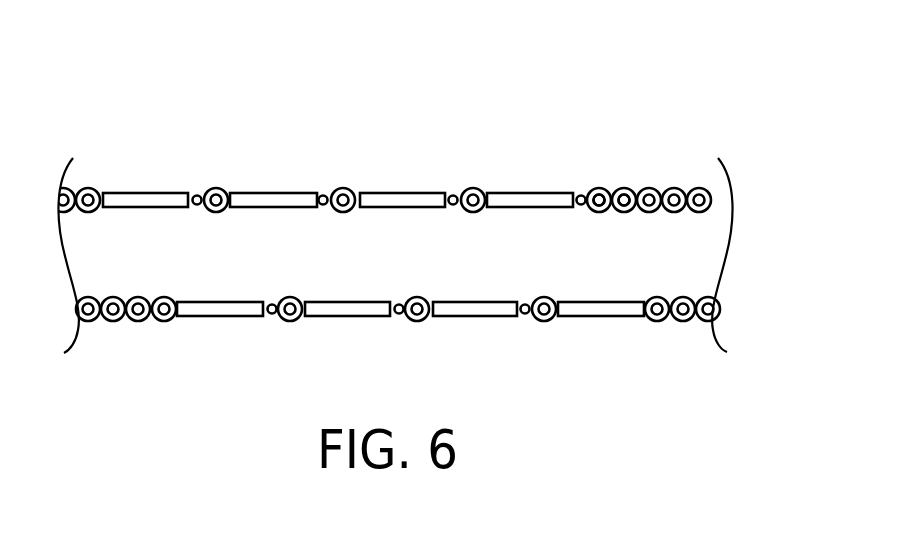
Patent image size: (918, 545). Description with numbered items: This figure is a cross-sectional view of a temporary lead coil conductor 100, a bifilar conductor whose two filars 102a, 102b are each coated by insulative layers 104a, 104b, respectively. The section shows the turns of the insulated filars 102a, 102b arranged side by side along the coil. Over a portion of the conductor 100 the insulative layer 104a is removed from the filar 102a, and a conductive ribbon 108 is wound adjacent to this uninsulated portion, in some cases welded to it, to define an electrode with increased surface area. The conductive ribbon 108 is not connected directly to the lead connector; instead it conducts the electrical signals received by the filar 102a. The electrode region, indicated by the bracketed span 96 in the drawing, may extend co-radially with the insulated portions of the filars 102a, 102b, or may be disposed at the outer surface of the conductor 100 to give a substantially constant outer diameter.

The temporary lead coil conductor 100 is at (394, 215).
The cable segment 96 is at (610, 335).
The conductive ribbon 108 is at (395, 193).
The filar 102a is at (624, 188).
The filar 102b is at (600, 188).
The insulative layer 104a is at (624, 212).
The insulative layer 104b is at (599, 212).